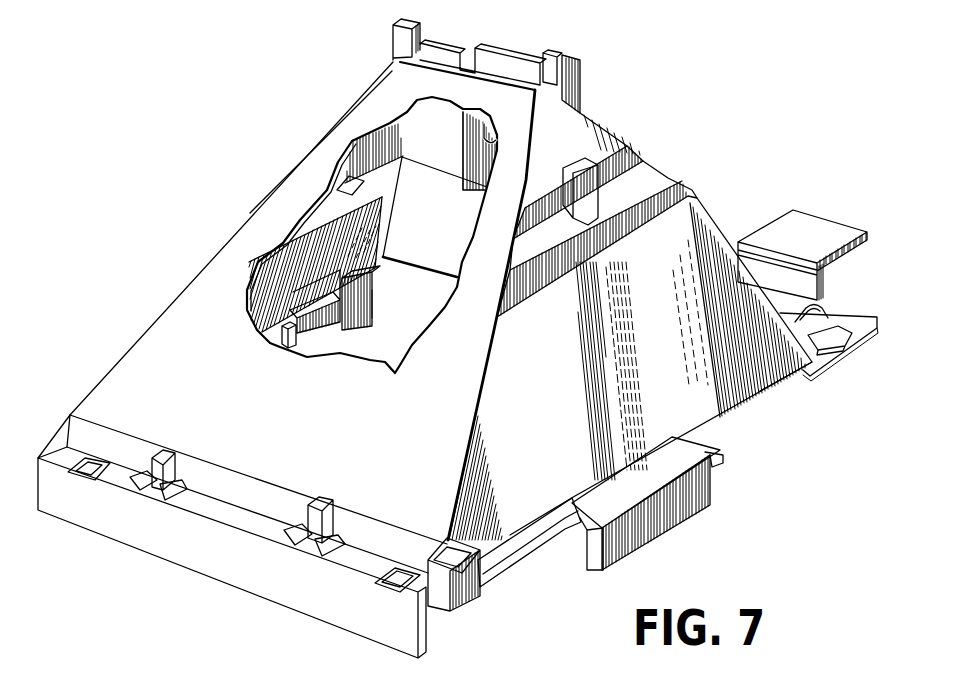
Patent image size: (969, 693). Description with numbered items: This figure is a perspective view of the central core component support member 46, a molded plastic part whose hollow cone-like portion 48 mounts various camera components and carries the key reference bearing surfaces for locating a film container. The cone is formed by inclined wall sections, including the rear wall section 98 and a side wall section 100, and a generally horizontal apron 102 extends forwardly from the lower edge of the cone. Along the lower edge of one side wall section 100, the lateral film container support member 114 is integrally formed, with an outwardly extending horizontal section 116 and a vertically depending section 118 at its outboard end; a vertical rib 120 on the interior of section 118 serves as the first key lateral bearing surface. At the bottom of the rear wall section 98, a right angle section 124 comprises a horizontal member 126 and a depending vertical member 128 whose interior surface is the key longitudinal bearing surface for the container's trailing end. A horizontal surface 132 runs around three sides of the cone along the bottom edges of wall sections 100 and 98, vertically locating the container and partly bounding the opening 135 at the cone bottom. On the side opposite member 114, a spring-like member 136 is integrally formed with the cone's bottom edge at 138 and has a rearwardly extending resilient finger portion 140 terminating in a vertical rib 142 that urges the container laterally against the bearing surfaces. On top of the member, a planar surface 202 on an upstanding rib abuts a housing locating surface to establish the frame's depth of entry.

The central core component support member 46 is at (529, 301).
The hollow cone-like portion 48 is at (230, 224).
The rear wall section 98 is at (145, 358).
The side wall section 100 is at (675, 228).
The apron 102 is at (838, 313).
The lateral film container support member 114 is at (722, 455).
The horizontal section 116 is at (572, 522).
The vertically depending section 118 is at (676, 520).
The vertical rib 120 is at (587, 550).
The right angle section 124 is at (61, 424).
The horizontal member 126 is at (222, 507).
The depending vertical member 128 is at (160, 547).
The horizontal surface 132 is at (266, 345).
The opening 135 is at (450, 274).
The spring-like member 136 is at (386, 307).
The attachment location of spring-like member 138 is at (378, 286).
The resilient finger portion 140 is at (322, 327).
The vertical rib 142 is at (292, 347).
The planar surface 202 is at (441, 52).